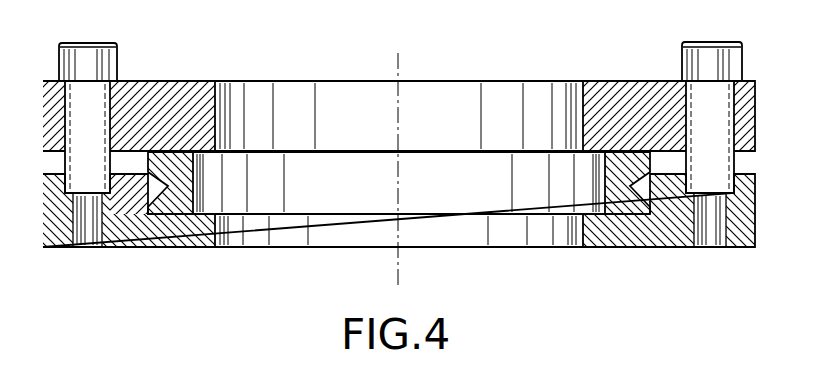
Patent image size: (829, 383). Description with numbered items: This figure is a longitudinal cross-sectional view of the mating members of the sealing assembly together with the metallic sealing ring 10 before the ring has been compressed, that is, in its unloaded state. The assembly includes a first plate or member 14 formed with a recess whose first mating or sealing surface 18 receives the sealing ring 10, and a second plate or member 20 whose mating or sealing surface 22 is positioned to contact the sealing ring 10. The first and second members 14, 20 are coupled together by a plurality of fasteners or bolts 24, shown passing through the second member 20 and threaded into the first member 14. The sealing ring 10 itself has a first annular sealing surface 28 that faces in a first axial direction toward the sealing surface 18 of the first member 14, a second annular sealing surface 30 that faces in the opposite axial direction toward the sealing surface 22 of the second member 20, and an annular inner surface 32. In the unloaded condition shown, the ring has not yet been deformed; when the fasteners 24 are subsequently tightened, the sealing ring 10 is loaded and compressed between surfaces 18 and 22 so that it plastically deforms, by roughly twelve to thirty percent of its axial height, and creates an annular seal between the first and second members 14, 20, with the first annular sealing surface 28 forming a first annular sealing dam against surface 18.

The metallic sealing ring 10 is at (539, 229).
The first plate or member 14 is at (163, 260).
The first mating or sealing surface 18 is at (205, 199).
The second plate or member 20 is at (187, 70).
The mating or sealing surface 22 is at (206, 153).
The fasteners or bolts 24 is at (93, 43).
The first annular sealing surface 28 is at (413, 229).
The second annular sealing surface 30 is at (332, 152).
The annular inner surface 32 is at (604, 172).